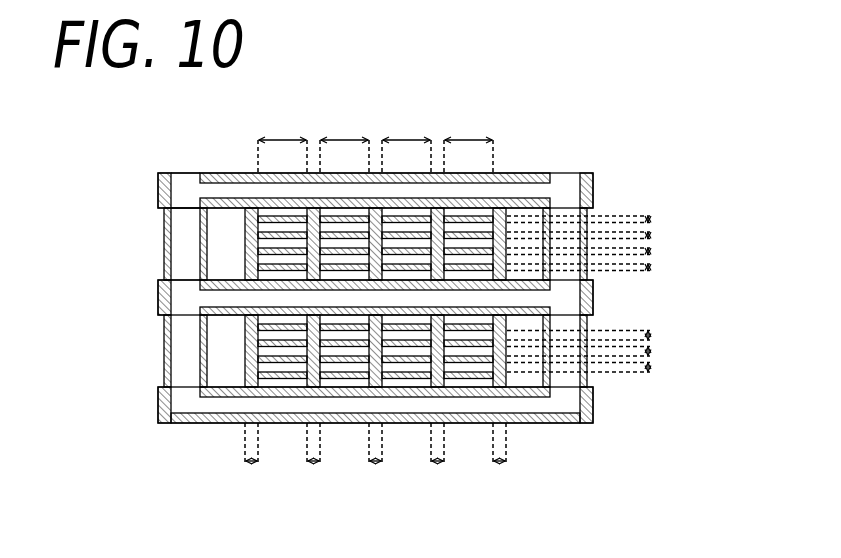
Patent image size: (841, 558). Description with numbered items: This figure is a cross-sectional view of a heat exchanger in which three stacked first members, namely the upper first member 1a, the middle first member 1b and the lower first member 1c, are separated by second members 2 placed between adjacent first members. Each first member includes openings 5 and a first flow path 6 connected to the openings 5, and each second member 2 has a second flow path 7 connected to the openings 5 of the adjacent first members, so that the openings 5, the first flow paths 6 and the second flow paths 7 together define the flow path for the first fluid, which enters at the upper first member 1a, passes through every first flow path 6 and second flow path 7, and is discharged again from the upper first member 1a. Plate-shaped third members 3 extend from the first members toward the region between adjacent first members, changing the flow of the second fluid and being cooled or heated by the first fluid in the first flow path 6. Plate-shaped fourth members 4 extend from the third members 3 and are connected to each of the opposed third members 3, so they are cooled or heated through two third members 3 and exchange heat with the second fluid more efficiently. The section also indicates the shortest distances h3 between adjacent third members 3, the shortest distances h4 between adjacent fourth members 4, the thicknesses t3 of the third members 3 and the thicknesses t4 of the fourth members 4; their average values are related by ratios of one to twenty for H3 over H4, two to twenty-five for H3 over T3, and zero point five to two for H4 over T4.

The upper first member 1a is at (158, 189).
The middle first member 1b is at (158, 300).
The lower first member 1c is at (158, 403).
The second member 2 is at (165, 263).
The third member 3 is at (245, 337).
The fourth member 4 is at (265, 358).
The opening 5 is at (183, 203).
The first flow path 6 is at (220, 202).
The second flow path 7 is at (187, 227).
The shortest distance between adjacent third members h3 is at (473, 130).
The thickness of third member t3 is at (499, 463).
The thickness of fourth member t4 is at (652, 267).
The shortest distance between adjacent fourth members h4 is at (652, 367).